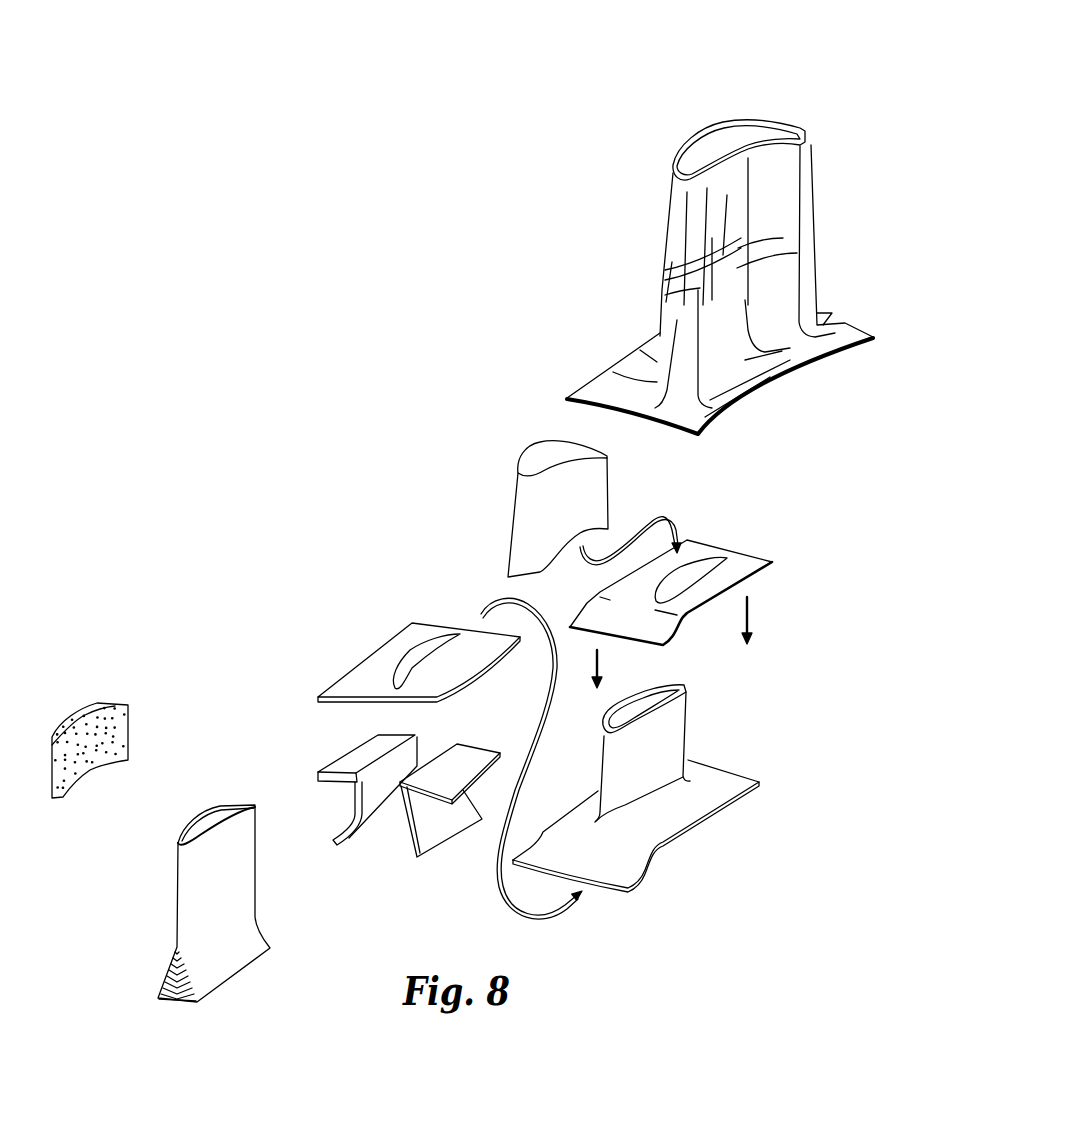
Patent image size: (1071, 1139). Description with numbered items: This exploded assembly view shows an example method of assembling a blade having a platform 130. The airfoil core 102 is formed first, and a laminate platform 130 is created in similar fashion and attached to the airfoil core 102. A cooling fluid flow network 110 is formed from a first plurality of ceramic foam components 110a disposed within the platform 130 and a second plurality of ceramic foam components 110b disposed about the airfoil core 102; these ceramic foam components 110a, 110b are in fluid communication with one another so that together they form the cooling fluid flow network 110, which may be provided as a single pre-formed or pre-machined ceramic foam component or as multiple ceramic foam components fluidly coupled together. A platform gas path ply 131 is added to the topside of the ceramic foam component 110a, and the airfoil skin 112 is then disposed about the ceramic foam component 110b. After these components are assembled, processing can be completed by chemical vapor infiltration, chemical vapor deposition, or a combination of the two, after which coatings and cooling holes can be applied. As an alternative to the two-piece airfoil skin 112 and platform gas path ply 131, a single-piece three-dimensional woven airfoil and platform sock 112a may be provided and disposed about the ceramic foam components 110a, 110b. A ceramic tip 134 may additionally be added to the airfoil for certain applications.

The airfoil and platform sock 112a is at (765, 108).
The airfoil skin 112 is at (582, 516).
The platform gas path ply 131 is at (642, 626).
The platform 130 is at (353, 663).
The ceramic tip 134 is at (117, 727).
The airfoil core 102 is at (661, 689).
The cooling fluid flow network 110 is at (697, 844).
The ceramic foam components 110a is at (613, 858).
The ceramic foam components 110b is at (663, 775).